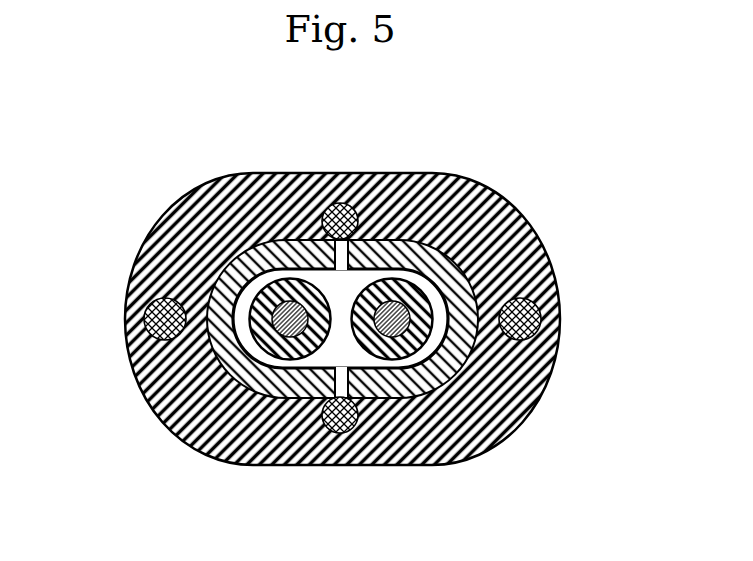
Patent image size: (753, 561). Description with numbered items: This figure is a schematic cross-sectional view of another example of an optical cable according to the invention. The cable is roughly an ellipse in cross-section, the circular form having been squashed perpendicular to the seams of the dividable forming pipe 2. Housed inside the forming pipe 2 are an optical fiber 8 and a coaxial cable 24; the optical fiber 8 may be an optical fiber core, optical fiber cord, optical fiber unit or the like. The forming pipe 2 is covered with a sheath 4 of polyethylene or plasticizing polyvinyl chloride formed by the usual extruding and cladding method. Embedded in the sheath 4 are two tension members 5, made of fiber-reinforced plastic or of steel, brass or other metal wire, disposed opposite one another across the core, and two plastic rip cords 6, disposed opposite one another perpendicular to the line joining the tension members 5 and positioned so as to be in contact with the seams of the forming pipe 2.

The forming pipe 2 is at (227, 250).
The sheath 4 is at (520, 235).
The tension members 5 is at (143, 313).
The rip cords 6 is at (340, 203).
The optical fiber 8 is at (423, 272).
The coaxial cable 24 is at (288, 271).